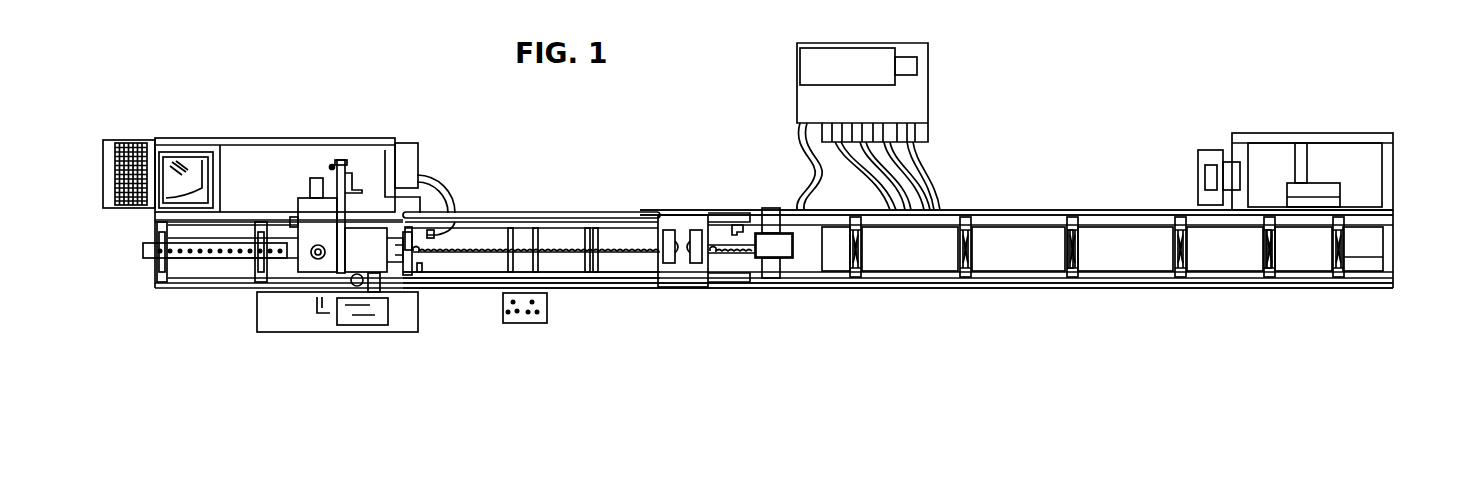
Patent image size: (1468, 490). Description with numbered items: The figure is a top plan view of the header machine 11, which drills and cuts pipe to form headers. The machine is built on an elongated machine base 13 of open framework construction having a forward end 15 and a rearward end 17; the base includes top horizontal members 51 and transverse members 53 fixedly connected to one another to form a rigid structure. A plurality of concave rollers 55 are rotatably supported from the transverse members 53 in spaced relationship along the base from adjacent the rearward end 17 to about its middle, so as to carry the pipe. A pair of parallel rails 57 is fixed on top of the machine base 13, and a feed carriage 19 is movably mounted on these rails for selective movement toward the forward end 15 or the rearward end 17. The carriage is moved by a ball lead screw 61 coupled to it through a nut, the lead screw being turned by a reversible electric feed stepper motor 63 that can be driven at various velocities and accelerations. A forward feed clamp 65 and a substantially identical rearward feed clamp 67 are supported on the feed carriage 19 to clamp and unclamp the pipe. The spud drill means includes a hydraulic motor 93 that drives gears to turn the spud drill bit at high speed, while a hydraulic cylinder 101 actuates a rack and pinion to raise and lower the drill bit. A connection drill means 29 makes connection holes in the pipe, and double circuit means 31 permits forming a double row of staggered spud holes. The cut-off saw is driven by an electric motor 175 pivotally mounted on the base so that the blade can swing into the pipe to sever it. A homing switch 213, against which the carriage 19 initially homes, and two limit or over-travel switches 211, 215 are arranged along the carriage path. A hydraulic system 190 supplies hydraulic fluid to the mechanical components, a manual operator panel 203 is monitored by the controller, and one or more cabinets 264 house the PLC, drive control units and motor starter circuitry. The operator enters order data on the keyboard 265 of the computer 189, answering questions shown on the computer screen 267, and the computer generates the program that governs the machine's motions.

The header machine 11 is at (1365, 61).
The machine base 13 is at (1323, 282).
The forward end 15 is at (160, 287).
The rearward end 17 is at (1387, 233).
The feed carriage 19 is at (683, 277).
The connection drill means 29 is at (389, 275).
The double circuit means 31 is at (298, 192).
The top horizontal members 51 is at (1113, 210).
The transverse members 53 is at (857, 277).
The concave rollers 55 is at (1068, 238).
The parallel rails 57 is at (577, 216).
The ball lead screw 61 is at (735, 258).
The feed stepper motor 63 is at (783, 250).
The forward feed clamp 65 is at (668, 230).
The rearward feed clamp 67 is at (697, 230).
The hydraulic motor 93 is at (317, 258).
The hydraulic cylinder 101 is at (343, 190).
The electric motor 175 is at (377, 312).
The computer 189 is at (119, 118).
The hydraulic system 190 is at (910, 100).
The manual operator panel 203 is at (543, 318).
The limit switch 211 is at (740, 226).
The homing switch 213 is at (437, 230).
The limit switch 215 is at (422, 268).
The cabinets 264 is at (1217, 148).
The keyboard 265 is at (143, 145).
The computer screen 267 is at (197, 183).